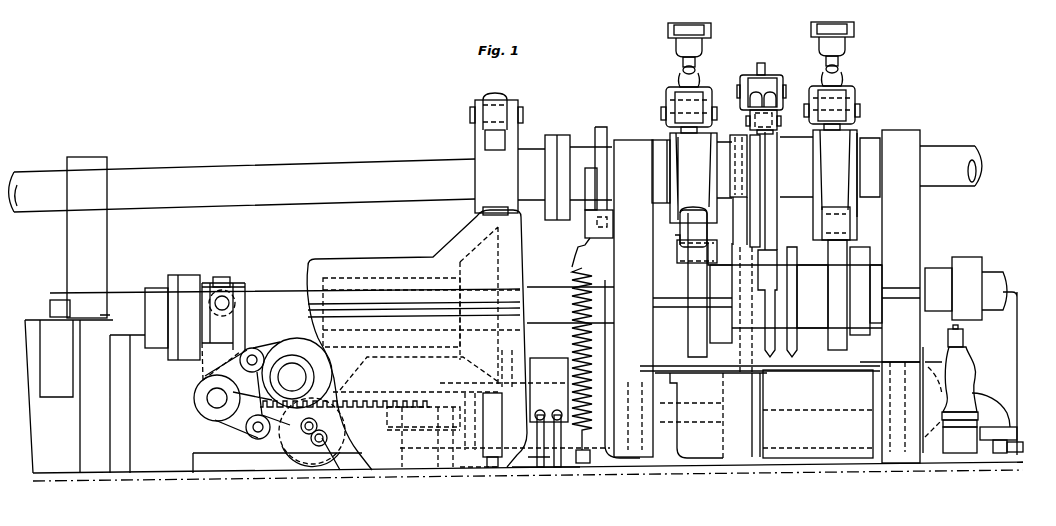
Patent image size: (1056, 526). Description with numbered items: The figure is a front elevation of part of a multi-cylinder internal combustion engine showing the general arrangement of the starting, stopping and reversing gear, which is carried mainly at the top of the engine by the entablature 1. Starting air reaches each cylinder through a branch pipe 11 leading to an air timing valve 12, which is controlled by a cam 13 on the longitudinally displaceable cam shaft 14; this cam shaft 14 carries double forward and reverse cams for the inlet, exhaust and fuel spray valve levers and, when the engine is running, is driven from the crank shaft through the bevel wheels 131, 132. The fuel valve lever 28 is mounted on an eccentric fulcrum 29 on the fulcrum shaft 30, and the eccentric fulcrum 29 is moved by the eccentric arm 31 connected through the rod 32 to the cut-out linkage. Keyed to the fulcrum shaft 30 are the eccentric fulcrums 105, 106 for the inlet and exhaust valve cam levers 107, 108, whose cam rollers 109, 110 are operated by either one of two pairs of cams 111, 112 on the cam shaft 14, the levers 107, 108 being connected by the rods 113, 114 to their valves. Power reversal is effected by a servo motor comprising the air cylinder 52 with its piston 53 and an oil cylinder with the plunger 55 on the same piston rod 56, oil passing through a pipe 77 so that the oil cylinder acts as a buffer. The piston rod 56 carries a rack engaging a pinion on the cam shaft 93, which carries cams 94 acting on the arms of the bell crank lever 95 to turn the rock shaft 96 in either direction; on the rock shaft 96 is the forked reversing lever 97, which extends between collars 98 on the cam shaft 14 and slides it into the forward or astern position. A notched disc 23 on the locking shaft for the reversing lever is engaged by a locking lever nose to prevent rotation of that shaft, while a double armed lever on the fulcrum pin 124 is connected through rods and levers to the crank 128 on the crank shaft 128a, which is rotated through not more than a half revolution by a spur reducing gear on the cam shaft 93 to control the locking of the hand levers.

The entablature 1 is at (938, 373).
The branch pipe 11 is at (1002, 448).
The air timing valve 12 is at (960, 350).
The cam 13 is at (965, 257).
The cam shaft 14 is at (995, 282).
The disc 23 is at (795, 352).
The fuel valve lever 28 is at (750, 160).
The eccentric fulcrum 29 is at (772, 157).
The fulcrum shaft 30 is at (223, 180).
The eccentric arm 31 is at (740, 138).
The rod 32 is at (742, 205).
The air cylinder 52 is at (780, 447).
The piston 53 is at (762, 413).
The plunger 55 is at (492, 440).
The piston rod 56 is at (452, 450).
The pipe 77 is at (645, 458).
The cam shaft 93 is at (292, 378).
The cams 94 is at (300, 262).
The bell crank lever 95 is at (248, 348).
The rock shaft 96 is at (213, 398).
The reversing lever 97 is at (220, 322).
The collars 98 is at (236, 293).
The eccentric fulcrum 105 is at (667, 167).
The eccentric fulcrum 106 is at (860, 163).
The inlet valve cam lever 107 is at (693, 145).
The exhaust valve cam lever 108 is at (833, 157).
The cam roller 109 is at (690, 253).
The cam roller 110 is at (855, 231).
The cams 111 is at (697, 318).
The cams 112 is at (860, 335).
The rod 113 is at (700, 68).
The rod 114 is at (843, 60).
The fulcrum pin 124 is at (244, 345).
The crank 128 is at (340, 407).
The crank shaft 128a is at (303, 428).
The bevel wheel 131 is at (487, 253).
The bevel wheel 132 is at (437, 362).